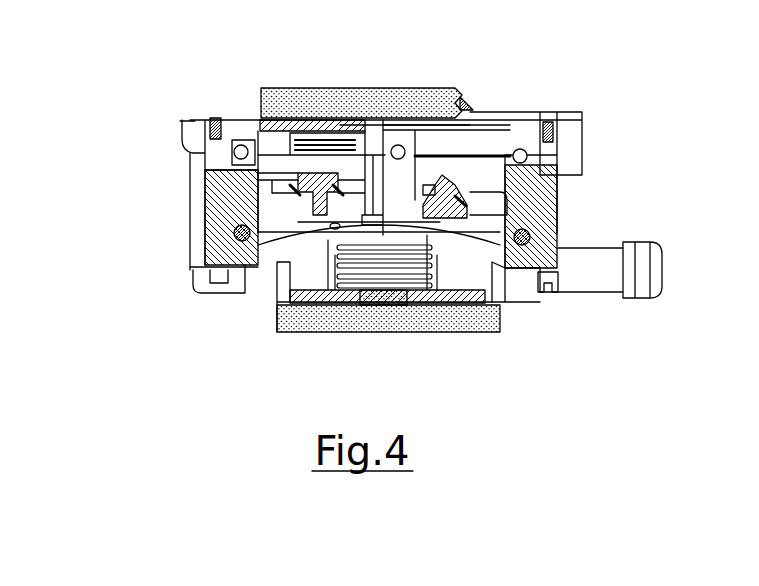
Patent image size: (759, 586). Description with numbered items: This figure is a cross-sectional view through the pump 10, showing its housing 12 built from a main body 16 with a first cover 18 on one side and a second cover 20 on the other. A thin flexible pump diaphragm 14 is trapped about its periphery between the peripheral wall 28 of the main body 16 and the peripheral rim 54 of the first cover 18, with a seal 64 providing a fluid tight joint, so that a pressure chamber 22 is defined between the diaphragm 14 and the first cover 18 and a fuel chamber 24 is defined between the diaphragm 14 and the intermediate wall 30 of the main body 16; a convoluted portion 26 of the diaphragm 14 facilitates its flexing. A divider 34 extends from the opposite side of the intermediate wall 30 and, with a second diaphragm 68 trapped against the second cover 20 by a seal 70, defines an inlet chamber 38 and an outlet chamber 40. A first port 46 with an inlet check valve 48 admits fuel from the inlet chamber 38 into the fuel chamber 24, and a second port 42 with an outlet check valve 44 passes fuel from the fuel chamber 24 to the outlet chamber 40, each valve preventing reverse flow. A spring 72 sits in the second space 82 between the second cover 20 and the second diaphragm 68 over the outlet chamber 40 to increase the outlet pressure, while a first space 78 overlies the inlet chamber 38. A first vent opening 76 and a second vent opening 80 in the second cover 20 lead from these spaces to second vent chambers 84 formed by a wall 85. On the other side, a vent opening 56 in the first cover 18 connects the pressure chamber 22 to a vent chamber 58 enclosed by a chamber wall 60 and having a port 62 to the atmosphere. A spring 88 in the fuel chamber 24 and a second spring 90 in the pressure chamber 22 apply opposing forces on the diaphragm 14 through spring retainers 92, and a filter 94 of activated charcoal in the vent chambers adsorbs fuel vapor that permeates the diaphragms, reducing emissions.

The pump 10 is at (622, 80).
The housing 12 is at (178, 196).
The pump diaphragm 14 is at (472, 262).
The main body 16 is at (540, 178).
The first cover 18 is at (560, 264).
The second cover 20 is at (515, 135).
The pressure chamber 22 is at (447, 278).
The fuel chamber 24 is at (578, 215).
The convoluted portion 26 is at (340, 243).
The peripheral wall 28 is at (580, 232).
The intermediate wall 30 is at (270, 212).
The divider 34 is at (468, 140).
The inlet chamber 38 is at (540, 146).
The outlet chamber 40 is at (190, 166).
The second port 42 is at (235, 234).
The outlet check valve 44 is at (308, 170).
The first port 46 is at (560, 200).
The inlet check valve 48 is at (490, 147).
The peripheral rim 54 is at (565, 250).
The vent opening 56 is at (380, 300).
The vent chamber 58 is at (342, 263).
The chamber wall 60 is at (340, 333).
The port 62 is at (222, 318).
The seal 64 is at (205, 268).
The second diaphragm 68 is at (545, 130).
The seal 70 is at (195, 128).
The spring 72 is at (333, 88).
The first vent opening 76 is at (458, 140).
The first space 78 is at (497, 140).
The second vent opening 80 is at (295, 88).
The second space 82 is at (264, 88).
The second vent chamber 84 is at (401, 88).
The wall 85 is at (462, 88).
The spring 88 is at (296, 246).
The second spring 90 is at (327, 284).
The spring retainer 92 is at (410, 300).
The filter 94 is at (363, 88).